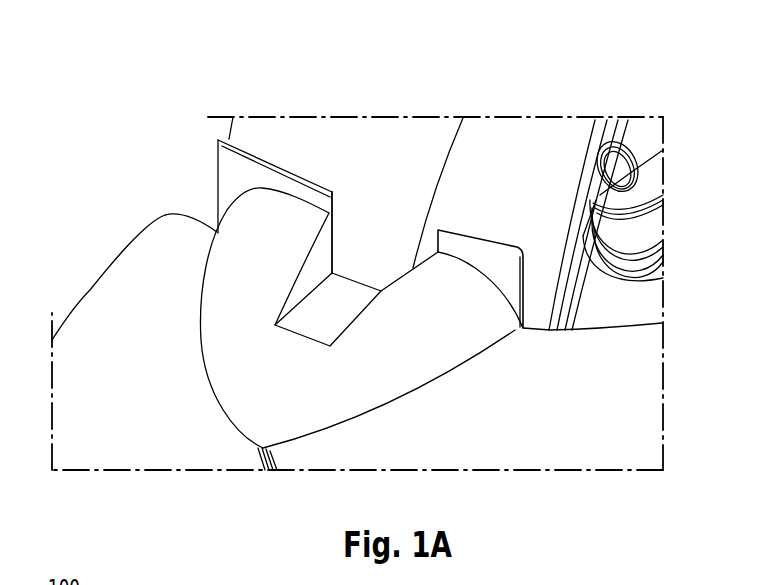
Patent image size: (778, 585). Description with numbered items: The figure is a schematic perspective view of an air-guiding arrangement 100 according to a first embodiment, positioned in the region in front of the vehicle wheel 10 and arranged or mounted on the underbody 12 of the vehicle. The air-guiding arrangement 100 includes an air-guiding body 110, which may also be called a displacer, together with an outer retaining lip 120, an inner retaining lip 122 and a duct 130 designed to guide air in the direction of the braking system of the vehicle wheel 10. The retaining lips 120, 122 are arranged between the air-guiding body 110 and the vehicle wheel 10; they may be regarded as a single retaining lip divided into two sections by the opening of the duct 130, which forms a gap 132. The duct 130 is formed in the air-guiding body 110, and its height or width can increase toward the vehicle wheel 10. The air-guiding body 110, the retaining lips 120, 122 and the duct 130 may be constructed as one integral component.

The vehicle wheel 10 is at (527, 143).
The underbody 12 is at (600, 447).
The air-guiding arrangement 100 is at (196, 189).
The air-guiding body 110 is at (233, 265).
The outer retaining lip 120 is at (277, 183).
The inner retaining lip 122 is at (477, 255).
The duct 130 is at (333, 300).
The gap 132 is at (337, 248).